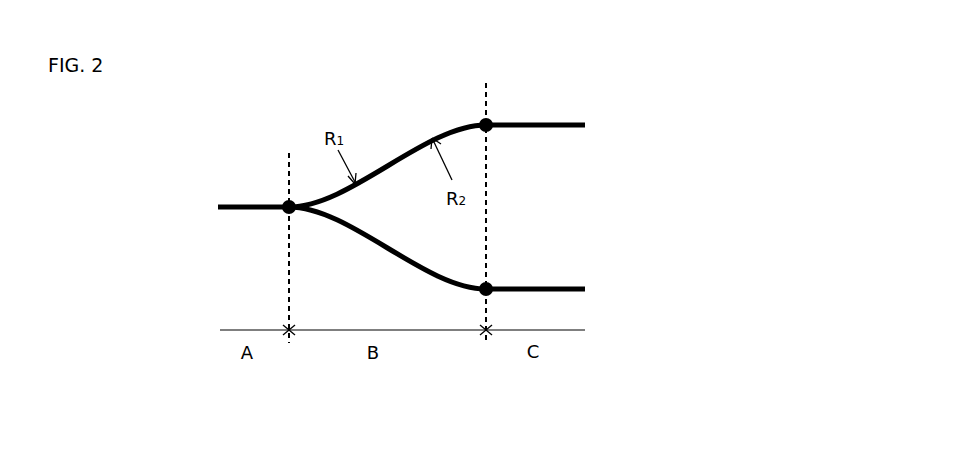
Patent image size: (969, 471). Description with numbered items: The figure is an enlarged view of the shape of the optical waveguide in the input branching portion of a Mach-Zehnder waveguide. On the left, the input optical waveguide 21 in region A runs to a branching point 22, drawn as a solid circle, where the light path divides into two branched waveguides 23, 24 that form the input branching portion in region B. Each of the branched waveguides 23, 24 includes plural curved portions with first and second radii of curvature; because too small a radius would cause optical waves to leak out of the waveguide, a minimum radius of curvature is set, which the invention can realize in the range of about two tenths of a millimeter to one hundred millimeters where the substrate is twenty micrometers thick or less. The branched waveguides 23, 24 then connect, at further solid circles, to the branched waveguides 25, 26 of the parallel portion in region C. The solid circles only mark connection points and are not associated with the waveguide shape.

The input optical waveguide 21 is at (247, 204).
The branching point 22 is at (289, 207).
The branched waveguide 23 is at (395, 153).
The branched waveguide 24 is at (425, 278).
The branched waveguide 25 is at (543, 122).
The branched waveguide 26 is at (543, 287).